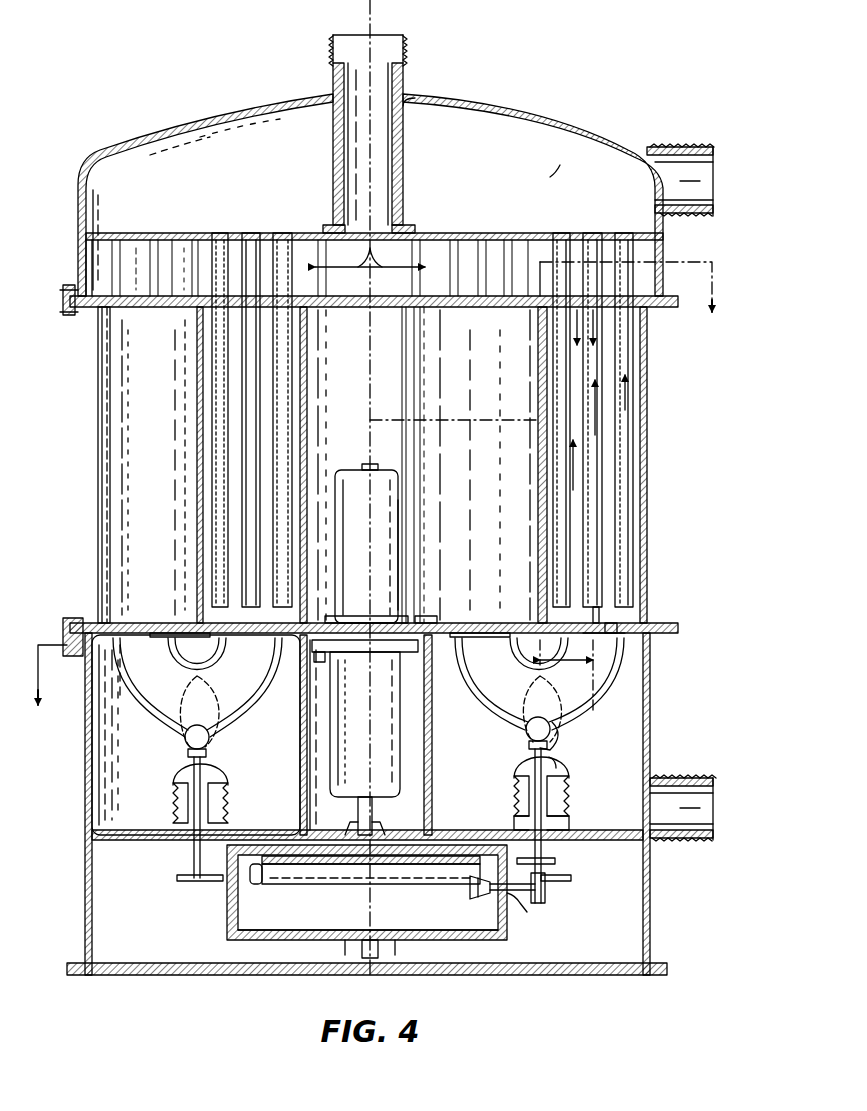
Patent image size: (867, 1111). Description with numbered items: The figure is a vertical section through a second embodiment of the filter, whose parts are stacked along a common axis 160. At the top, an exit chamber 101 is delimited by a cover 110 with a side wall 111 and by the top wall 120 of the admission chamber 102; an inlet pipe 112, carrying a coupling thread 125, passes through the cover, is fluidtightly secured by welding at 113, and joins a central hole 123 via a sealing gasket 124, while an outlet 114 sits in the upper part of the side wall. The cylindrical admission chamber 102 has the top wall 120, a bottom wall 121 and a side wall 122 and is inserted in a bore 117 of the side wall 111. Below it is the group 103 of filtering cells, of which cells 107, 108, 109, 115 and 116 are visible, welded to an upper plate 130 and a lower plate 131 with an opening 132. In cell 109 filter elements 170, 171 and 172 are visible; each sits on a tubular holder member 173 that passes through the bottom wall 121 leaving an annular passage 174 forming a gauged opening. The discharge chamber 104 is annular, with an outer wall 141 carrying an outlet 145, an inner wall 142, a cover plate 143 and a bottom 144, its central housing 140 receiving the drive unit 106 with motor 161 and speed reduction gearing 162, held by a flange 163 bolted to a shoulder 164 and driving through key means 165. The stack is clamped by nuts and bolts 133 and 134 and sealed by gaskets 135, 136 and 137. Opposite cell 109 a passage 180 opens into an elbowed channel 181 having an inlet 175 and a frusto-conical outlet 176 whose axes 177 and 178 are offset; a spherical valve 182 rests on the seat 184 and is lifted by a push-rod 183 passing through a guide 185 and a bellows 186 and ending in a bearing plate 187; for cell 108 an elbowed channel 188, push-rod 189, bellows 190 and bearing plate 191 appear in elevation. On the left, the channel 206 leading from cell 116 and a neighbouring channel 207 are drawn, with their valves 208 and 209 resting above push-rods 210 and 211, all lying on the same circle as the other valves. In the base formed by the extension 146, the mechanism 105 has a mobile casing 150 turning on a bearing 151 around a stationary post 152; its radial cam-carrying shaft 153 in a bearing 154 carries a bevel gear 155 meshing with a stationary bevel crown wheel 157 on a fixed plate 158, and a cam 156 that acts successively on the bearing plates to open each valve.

The exit chamber 101 is at (548, 123).
The admission chamber 102 is at (200, 262).
The group of filtering cells 103 is at (92, 494).
The discharge chamber 104 is at (102, 793).
The mechanism 105 is at (222, 903).
The drive unit 106 is at (418, 565).
The filter cell 107 is at (429, 465).
The filter cell 108 is at (493, 465).
The filter cell 109 is at (647, 420).
The cover 110 is at (509, 105).
The side wall 111 is at (78, 213).
The inlet pipe 112 is at (333, 150).
The welding 113 is at (403, 100).
The outlet 114 is at (664, 152).
The filter cell 115 is at (153, 467).
The filter cell 116 is at (198, 482).
The bore 117 is at (93, 262).
The top wall 120 is at (465, 235).
The bottom wall 121 is at (348, 307).
The side wall 122 is at (106, 306).
The hole 123 is at (342, 226).
The sealing gasket 124 is at (409, 228).
The coupling thread 125 is at (333, 56).
The upper plate 130 is at (384, 307).
The lower plate 131 is at (115, 623).
The opening 132 is at (336, 620).
The nut and bolt 133 is at (90, 258).
The nut and bolt 134 is at (52, 652).
The annular sealing gasket 135 is at (76, 310).
The annular sealing gasket 136 is at (75, 624).
The annular sealing gasket 137 is at (425, 622).
The housing 140 is at (303, 790).
The outer wall 141 is at (87, 765).
The inner wall 142 is at (303, 806).
The cover plate 143 is at (162, 623).
The bottom 144 is at (134, 829).
The outlet 145 is at (671, 778).
The extension 146 is at (88, 891).
The mobile casing 150 is at (346, 940).
The bearing 151 is at (378, 940).
The stationary post 152 is at (333, 918).
The cam-carrying shaft 153 is at (495, 897).
The bearing 154 is at (531, 911).
The bevel gear 155 is at (470, 887).
The cam 156 is at (547, 892).
The bevel crown wheel 157 is at (262, 884).
The fixed plate 158 is at (306, 878).
The common axis 160 is at (372, 18).
The motor 161 is at (348, 485).
The speed reduction gearing 162 is at (365, 724).
The outwardly turned flange 163 is at (362, 652).
The shoulder 164 is at (388, 652).
The key means 165 is at (374, 812).
The filter element 170 is at (630, 465).
The filter element 171 is at (600, 487).
The filter element 172 is at (560, 463).
The tubular holder member 173 is at (590, 235).
The annular passage 174 is at (640, 290).
The inlet 175 is at (620, 640).
The frusto-conical outlet 176 is at (560, 742).
The axis 177 is at (596, 620).
The axis 178 is at (540, 661).
The passage 180 is at (612, 633).
The elbowed channel 181 is at (620, 671).
The valve 182 is at (526, 730).
The push-rod 183 is at (523, 764).
The seat 184 is at (528, 748).
The guide 185 is at (520, 792).
The bellows 186 is at (520, 813).
The bearing plate 187 is at (556, 860).
The elbowed channel 188 is at (477, 689).
The push-rod 189 is at (555, 759).
The bellows 190 is at (560, 780).
The bearing plate 191 is at (571, 878).
The channel 206 is at (263, 683).
The funnel wall 207 is at (140, 682).
The valve 208 is at (185, 742).
The valve 209 is at (206, 746).
The push-rod 210 is at (190, 760).
The push-rod 211 is at (205, 760).